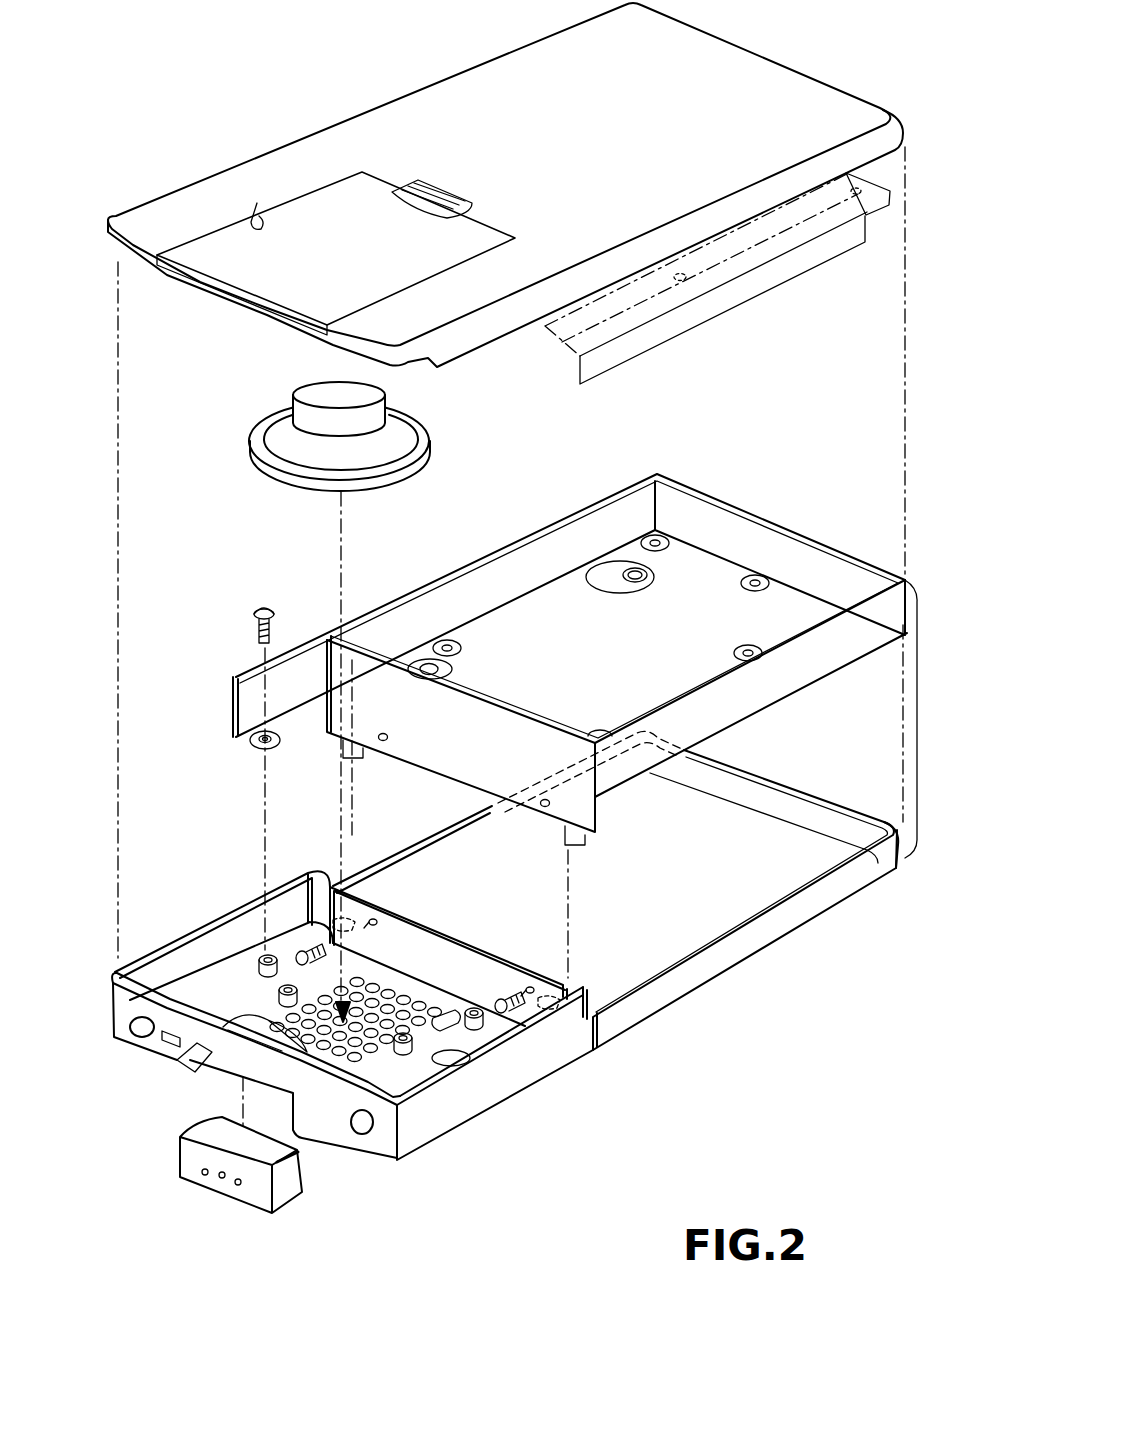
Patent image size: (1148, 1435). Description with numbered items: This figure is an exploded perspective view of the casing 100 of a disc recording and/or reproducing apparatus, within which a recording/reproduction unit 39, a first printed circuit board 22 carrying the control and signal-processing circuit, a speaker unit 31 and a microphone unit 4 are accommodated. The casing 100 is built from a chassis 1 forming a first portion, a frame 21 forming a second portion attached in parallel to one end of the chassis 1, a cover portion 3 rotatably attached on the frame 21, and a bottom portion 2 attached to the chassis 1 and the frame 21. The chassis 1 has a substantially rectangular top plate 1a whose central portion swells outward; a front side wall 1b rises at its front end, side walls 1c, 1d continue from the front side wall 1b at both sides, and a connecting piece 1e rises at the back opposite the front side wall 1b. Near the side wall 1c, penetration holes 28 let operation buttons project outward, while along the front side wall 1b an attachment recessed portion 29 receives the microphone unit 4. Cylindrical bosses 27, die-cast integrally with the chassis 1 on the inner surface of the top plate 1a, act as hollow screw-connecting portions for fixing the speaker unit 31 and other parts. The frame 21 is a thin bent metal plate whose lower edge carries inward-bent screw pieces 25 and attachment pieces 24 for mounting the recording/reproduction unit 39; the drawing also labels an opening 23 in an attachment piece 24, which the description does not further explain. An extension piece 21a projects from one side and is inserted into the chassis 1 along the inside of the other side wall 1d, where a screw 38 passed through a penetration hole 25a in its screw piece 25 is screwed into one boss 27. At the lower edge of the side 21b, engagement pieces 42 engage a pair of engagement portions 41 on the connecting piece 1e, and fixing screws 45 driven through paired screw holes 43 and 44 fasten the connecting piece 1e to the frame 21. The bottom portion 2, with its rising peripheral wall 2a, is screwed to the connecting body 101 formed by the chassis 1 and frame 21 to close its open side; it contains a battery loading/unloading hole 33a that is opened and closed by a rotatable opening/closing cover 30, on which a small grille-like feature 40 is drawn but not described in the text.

The chassis 1 is at (445, 1148).
The top plate 1a is at (200, 990).
The front side wall 1b is at (327, 1128).
The side wall 1c is at (230, 905).
The other side wall 1d is at (540, 1075).
The connecting piece 1e is at (462, 950).
The bottom portion 2 is at (770, 75).
The rising peripheral wall 2a is at (467, 337).
The cover portion 3 is at (800, 915).
The microphone unit 4 is at (188, 1155).
The frame 21 is at (807, 678).
The extension piece 21a is at (246, 690).
The side 21b is at (497, 718).
The first printed circuit board 22 is at (823, 213).
The screw hole 23 is at (636, 582).
The attachment pieces 24 is at (617, 558).
The screw pieces 25 is at (668, 543).
The penetration hole 25a is at (266, 746).
The cylindrical bosses 27 is at (266, 952).
The penetration holes 28 is at (455, 1066).
The attachment recessed portion 29 is at (190, 1060).
The opening/closing cover 30 is at (345, 195).
The speaker unit 31 is at (302, 442).
The battery loading/unloading hole 33a is at (257, 215).
The screw 38 is at (262, 605).
The recording/reproduction unit 39 is at (743, 286).
The grille 40 is at (442, 193).
The engagement portions 41 is at (352, 912).
The engagement pieces 42 is at (345, 750).
The screw holes 43 is at (376, 918).
The screw holes 44 is at (383, 742).
The fixing screws 45 is at (305, 948).
The casing 100 is at (922, 382).
The connecting body 101 is at (918, 733).